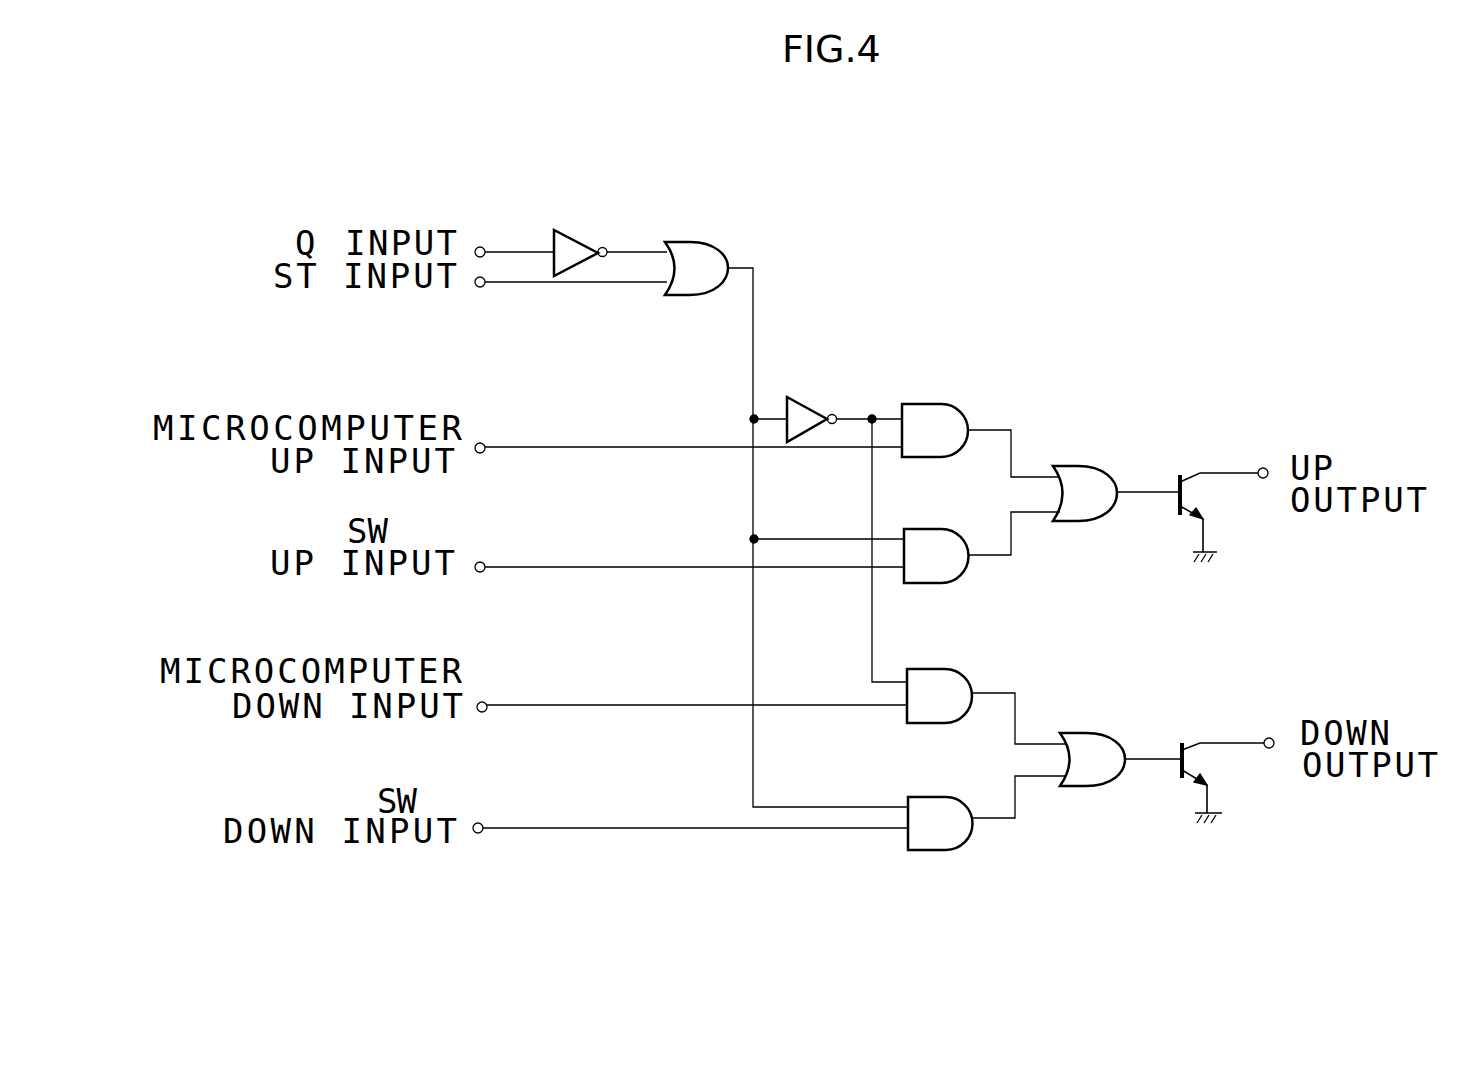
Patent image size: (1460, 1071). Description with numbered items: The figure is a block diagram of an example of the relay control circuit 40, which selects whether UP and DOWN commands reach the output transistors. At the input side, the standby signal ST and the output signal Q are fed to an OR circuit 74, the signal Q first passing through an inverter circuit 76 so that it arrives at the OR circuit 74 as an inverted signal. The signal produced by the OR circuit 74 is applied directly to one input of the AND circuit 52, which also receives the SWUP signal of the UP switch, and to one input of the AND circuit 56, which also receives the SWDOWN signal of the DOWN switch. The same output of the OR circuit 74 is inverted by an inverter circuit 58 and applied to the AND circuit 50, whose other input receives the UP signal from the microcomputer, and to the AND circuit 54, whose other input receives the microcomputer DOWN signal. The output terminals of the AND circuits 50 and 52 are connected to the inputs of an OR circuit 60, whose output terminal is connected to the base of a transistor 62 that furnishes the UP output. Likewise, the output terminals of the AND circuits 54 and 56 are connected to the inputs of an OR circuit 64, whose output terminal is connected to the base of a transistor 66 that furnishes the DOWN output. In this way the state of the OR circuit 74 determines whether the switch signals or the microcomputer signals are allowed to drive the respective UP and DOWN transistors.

The relay control circuit 40 is at (970, 232).
The AND circuit 50 is at (932, 407).
The AND circuit 52 is at (962, 583).
The AND circuit 54 is at (952, 723).
The AND circuit 56 is at (968, 848).
The inverter circuit 58 is at (820, 412).
The OR circuit 60 is at (1088, 466).
The transistor 62 is at (1178, 521).
The OR circuit 64 is at (1090, 786).
The transistor 66 is at (1184, 784).
The OR circuit 74 is at (677, 298).
The inverter circuit 76 is at (583, 243).